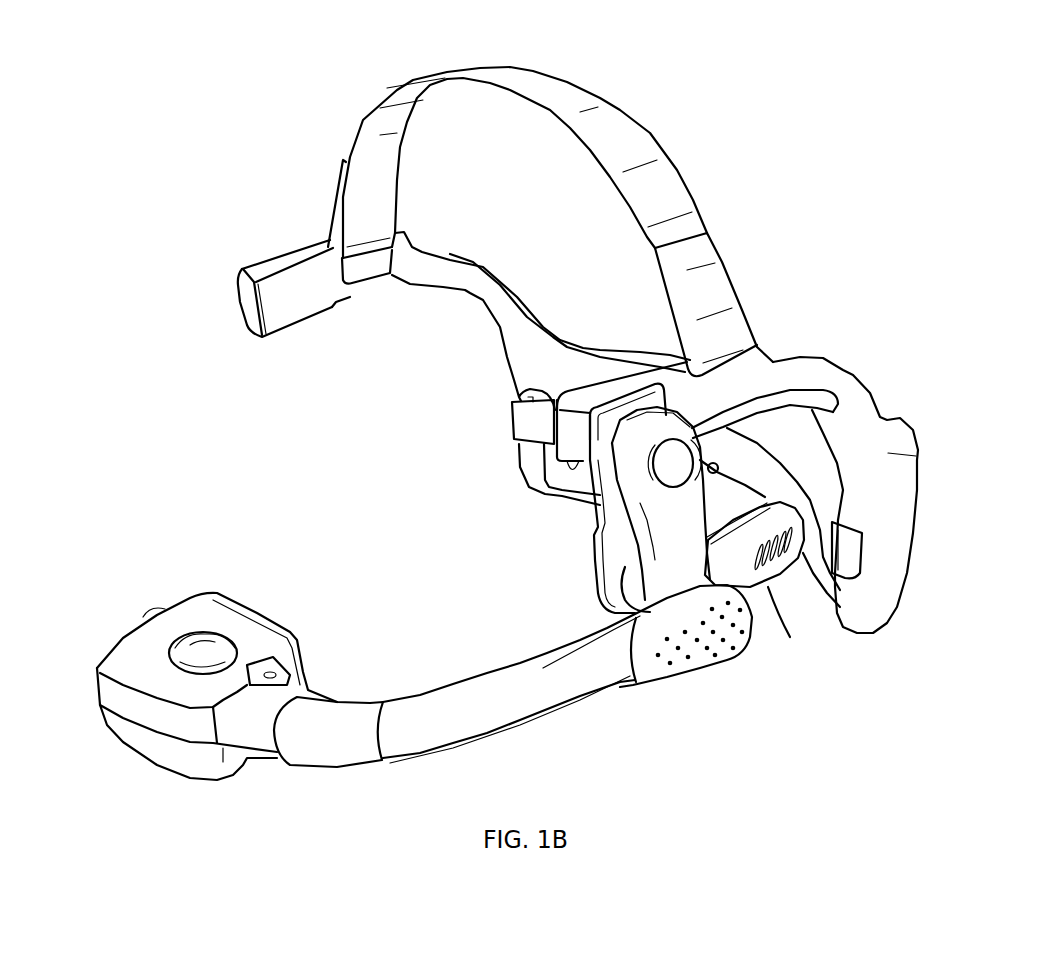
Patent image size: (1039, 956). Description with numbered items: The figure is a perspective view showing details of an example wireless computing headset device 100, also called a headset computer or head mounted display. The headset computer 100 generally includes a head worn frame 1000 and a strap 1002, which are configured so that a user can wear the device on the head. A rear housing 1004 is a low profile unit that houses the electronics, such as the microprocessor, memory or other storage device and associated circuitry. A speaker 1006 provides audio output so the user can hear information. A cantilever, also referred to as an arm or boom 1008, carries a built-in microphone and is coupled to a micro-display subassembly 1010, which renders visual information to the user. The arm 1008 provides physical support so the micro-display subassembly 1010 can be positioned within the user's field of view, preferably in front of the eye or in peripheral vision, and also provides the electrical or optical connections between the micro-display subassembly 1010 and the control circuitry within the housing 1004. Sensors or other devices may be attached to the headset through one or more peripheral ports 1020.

The wireless computing headset device 100 is at (215, 106).
The frame 1000 is at (290, 328).
The strap 1002 is at (652, 133).
The rear housing 1004 is at (917, 505).
The speaker 1006 is at (770, 585).
The arm or boom 1008 is at (540, 720).
The micro-display subassembly 1010 is at (225, 592).
The peripheral port 1020 is at (248, 304).